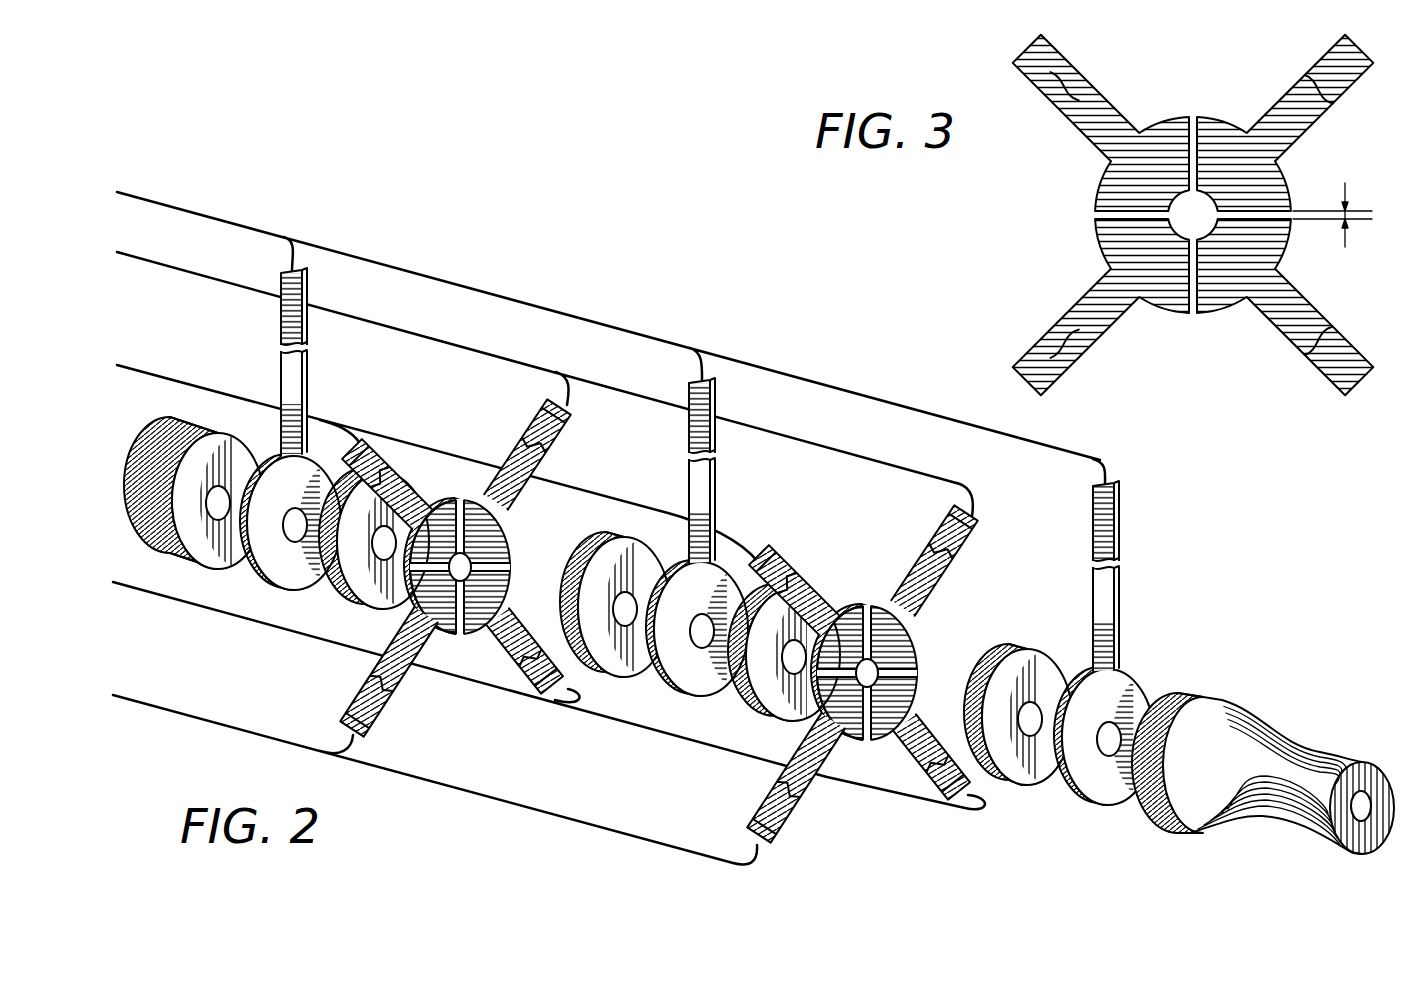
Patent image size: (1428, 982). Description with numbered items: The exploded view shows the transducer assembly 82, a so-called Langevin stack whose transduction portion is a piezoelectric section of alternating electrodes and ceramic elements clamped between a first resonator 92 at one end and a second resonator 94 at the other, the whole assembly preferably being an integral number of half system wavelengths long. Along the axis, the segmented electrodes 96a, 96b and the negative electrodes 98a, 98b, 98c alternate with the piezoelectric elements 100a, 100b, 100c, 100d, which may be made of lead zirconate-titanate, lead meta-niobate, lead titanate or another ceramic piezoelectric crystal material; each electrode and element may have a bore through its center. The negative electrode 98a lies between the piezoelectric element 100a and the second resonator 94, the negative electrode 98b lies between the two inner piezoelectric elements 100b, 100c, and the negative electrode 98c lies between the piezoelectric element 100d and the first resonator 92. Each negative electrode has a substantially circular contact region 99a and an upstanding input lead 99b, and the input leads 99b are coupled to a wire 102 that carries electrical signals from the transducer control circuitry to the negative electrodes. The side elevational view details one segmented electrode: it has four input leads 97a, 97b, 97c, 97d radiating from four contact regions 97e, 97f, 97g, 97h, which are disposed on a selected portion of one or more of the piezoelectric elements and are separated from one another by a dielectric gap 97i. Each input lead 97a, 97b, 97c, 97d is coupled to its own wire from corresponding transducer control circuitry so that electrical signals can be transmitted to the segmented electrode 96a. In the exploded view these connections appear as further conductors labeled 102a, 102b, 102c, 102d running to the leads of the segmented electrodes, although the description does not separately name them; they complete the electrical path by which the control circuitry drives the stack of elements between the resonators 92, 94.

In FIG. 2, the transducer assembly 82 is at (747, 539).
In FIG. 2, the first resonator 92 is at (150, 433).
In FIG. 2, the second resonator 94 is at (1318, 742).
In FIG. 2, the segmented electrode 96a is at (917, 650).
In FIG. 2, the segmented electrode 96b is at (508, 550).
In FIG. 3, the input lead 97a is at (1036, 66).
In FIG. 2, the input lead 97a is at (772, 558).
In FIG. 3, the input lead 97b is at (1356, 78).
In FIG. 2, the input lead 97b is at (969, 537).
In FIG. 3, the input lead 97c is at (1360, 355).
In FIG. 2, the input lead 97c is at (946, 785).
In FIG. 3, the input lead 97d is at (1030, 350).
In FIG. 2, the input lead 97d is at (788, 828).
In FIG. 3, the contact region 97e is at (1108, 177).
In FIG. 3, the contact region 97f is at (1228, 125).
In FIG. 3, the contact region 97g is at (1223, 306).
In FIG. 3, the contact region 97h is at (1160, 305).
In FIG. 3, the dielectric gap 97i is at (1346, 185).
In FIG. 2, the negative electrode 98a is at (1097, 797).
In FIG. 2, the negative electrode 98b is at (682, 689).
In FIG. 2, the negative electrode 98c is at (281, 580).
In FIG. 2, the contact region 99a is at (321, 466).
In FIG. 2, the input lead 99b is at (307, 280).
In FIG. 2, the piezoelectric element 100a is at (1031, 789).
In FIG. 2, the piezoelectric element 100b is at (748, 715).
In FIG. 2, the piezoelectric element 100c is at (617, 678).
In FIG. 2, the piezoelectric element 100d is at (376, 602).
In FIG. 2, the wire 102 is at (447, 281).
In FIG. 2, the conductor wire 102a is at (200, 387).
In FIG. 2, the conductor wire 102b is at (222, 281).
In FIG. 2, the conductor wire 102c is at (220, 613).
In FIG. 2, the conductor wire 102d is at (420, 780).